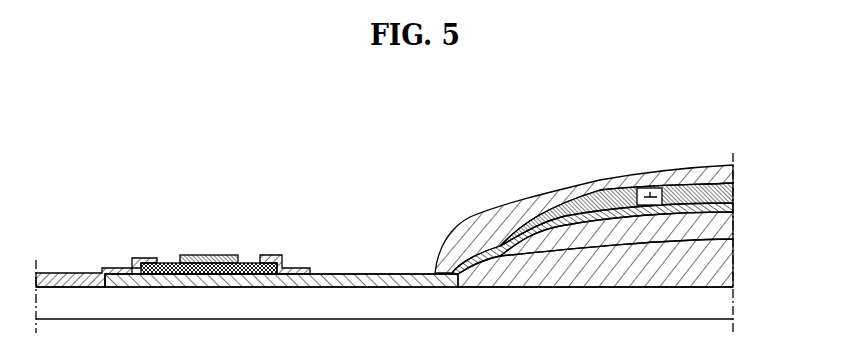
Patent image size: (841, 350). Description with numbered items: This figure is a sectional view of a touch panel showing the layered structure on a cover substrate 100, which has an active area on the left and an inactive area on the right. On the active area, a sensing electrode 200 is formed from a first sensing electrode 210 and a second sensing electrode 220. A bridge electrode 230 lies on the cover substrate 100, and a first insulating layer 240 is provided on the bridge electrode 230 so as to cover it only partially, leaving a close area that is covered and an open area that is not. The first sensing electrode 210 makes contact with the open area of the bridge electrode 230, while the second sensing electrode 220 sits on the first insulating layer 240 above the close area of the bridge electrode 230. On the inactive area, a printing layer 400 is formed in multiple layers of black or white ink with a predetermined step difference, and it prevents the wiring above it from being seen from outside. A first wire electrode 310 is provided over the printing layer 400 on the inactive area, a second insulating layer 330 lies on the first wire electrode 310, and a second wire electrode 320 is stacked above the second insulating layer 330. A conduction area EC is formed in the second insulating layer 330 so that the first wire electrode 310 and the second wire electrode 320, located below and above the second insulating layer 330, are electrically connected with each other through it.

The cover substrate 100 is at (723, 303).
The sensing electrode 200 is at (185, 220).
The first sensing electrode 210 is at (145, 257).
The second sensing electrode 220 is at (205, 254).
The bridge electrode 230 is at (292, 267).
The first insulating layer 240 is at (247, 262).
The first wire electrode 310 is at (728, 208).
The second wire electrode 320 is at (733, 173).
The second insulating layer 330 is at (733, 192).
The printing layer 400 is at (723, 263).
The conduction area EC is at (650, 192).